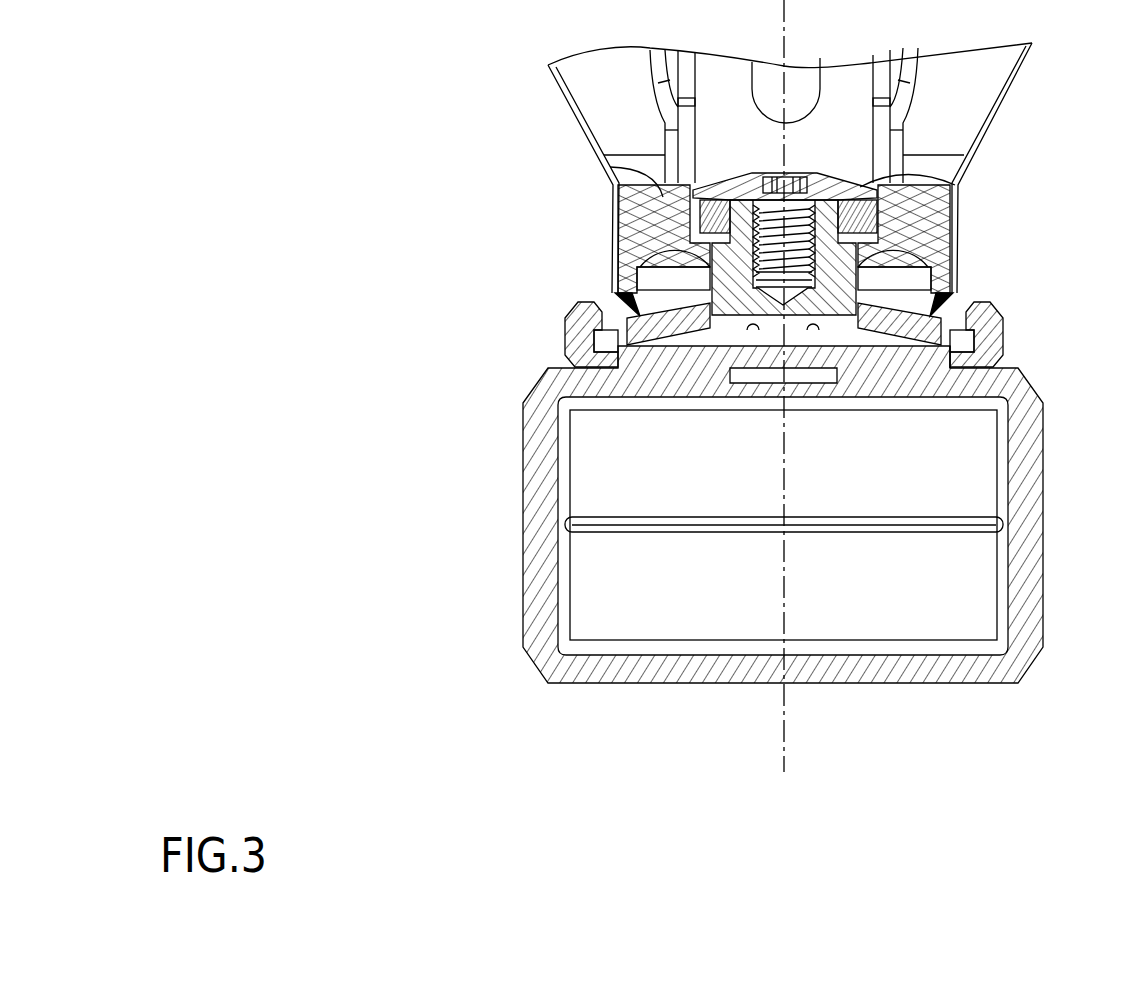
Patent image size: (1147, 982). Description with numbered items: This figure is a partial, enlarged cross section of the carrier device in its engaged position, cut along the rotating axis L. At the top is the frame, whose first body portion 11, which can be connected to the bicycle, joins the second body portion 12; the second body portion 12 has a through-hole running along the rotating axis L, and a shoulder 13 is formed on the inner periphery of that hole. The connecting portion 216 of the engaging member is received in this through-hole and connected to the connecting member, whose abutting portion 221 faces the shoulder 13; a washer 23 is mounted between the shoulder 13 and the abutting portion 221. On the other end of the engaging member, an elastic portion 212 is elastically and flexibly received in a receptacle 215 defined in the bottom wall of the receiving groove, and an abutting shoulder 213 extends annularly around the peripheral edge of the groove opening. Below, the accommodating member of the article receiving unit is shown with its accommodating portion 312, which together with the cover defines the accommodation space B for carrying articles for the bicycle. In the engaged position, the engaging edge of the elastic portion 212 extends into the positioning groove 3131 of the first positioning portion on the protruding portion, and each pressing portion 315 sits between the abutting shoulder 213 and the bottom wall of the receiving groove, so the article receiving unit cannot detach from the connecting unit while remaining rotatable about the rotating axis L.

The first body portion 11 is at (847, 82).
The second body portion 12 is at (616, 168).
The shoulder 13 is at (640, 203).
The connecting portion 216 is at (640, 234).
The receptacle 215 is at (620, 293).
The elastic portion 212 is at (645, 320).
The pressing portion 315 is at (566, 320).
The positioning groove 3131 is at (612, 341).
The abutting portion 221 is at (957, 187).
The washer 23 is at (940, 217).
The accommodating portion 312 is at (1027, 565).
The abutting shoulder 213 is at (995, 358).
The accommodation space B is at (975, 495).
The rotating axis L is at (786, 738).